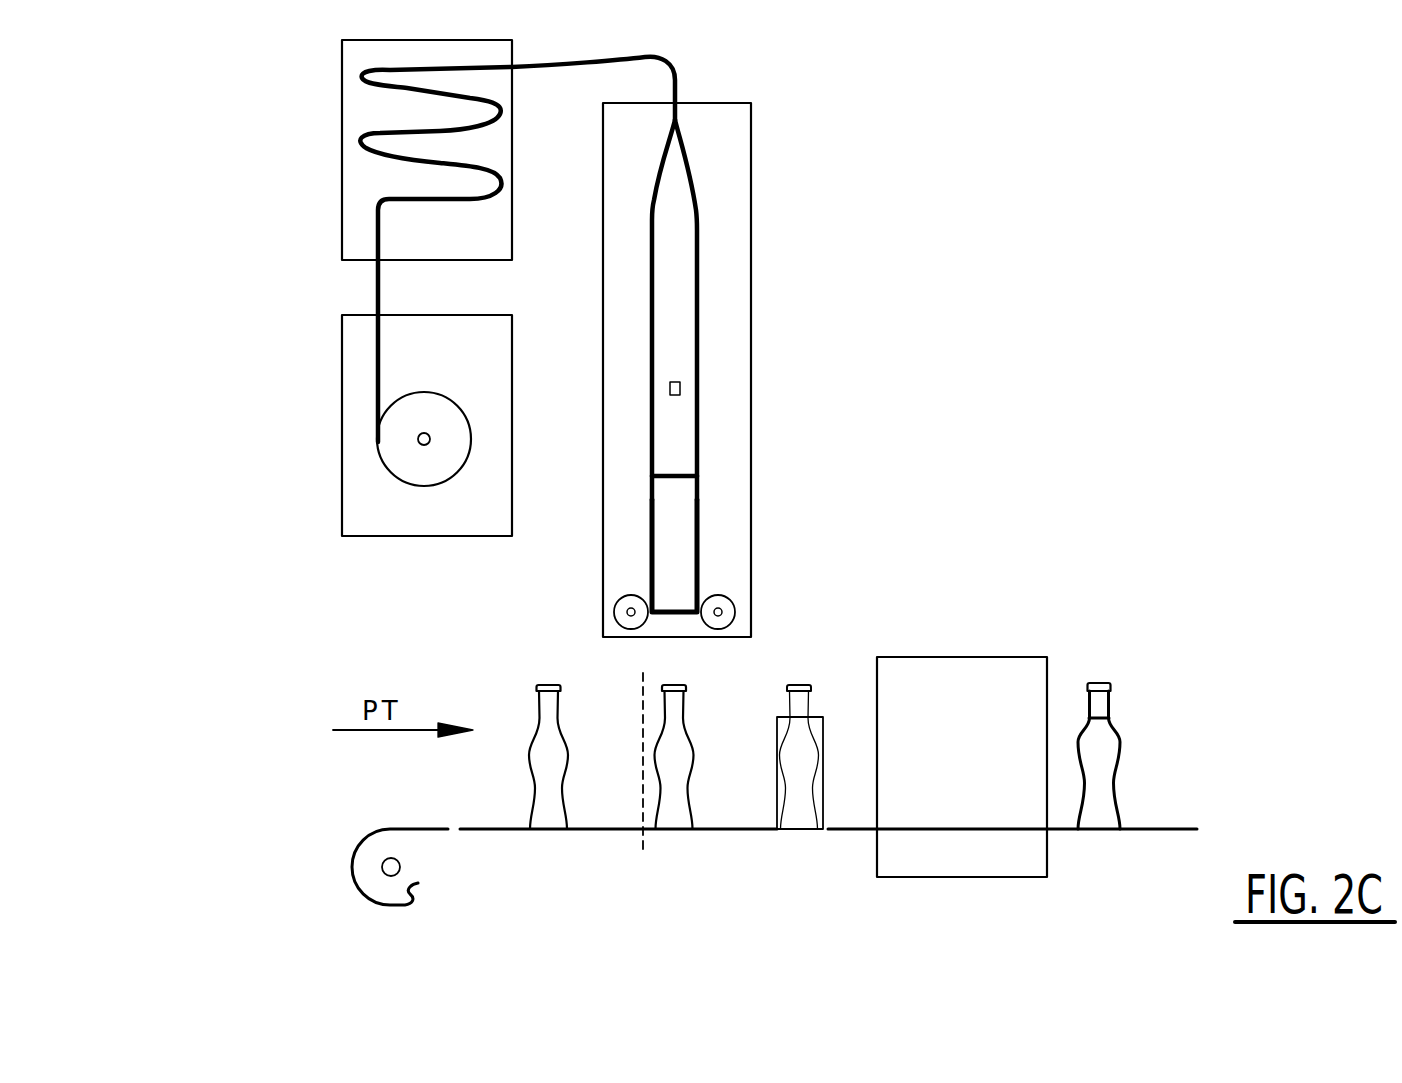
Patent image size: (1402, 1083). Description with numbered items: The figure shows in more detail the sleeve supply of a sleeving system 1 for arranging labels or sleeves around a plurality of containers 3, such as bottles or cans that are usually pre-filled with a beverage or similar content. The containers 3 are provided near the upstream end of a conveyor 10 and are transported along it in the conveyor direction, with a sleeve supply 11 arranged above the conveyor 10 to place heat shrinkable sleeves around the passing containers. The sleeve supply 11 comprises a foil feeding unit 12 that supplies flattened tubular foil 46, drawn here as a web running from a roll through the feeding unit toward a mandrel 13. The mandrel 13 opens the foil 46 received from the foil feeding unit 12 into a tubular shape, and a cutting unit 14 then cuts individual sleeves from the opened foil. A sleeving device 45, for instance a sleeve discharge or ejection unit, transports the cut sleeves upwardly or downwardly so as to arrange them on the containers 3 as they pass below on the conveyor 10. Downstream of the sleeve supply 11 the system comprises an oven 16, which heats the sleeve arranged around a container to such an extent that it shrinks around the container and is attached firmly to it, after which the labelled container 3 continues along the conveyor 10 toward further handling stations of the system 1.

The sleeving system 1 is at (1150, 317).
The container 3 is at (553, 780).
The conveyor 10 is at (455, 828).
The sleeve supply 11 is at (573, 43).
The foil feeding unit 12 is at (300, 545).
The mandrel 13 is at (675, 183).
The cutting unit 14 is at (675, 476).
The oven 16 is at (962, 767).
The sleeving device 45 is at (712, 586).
The foil 46 is at (377, 293).